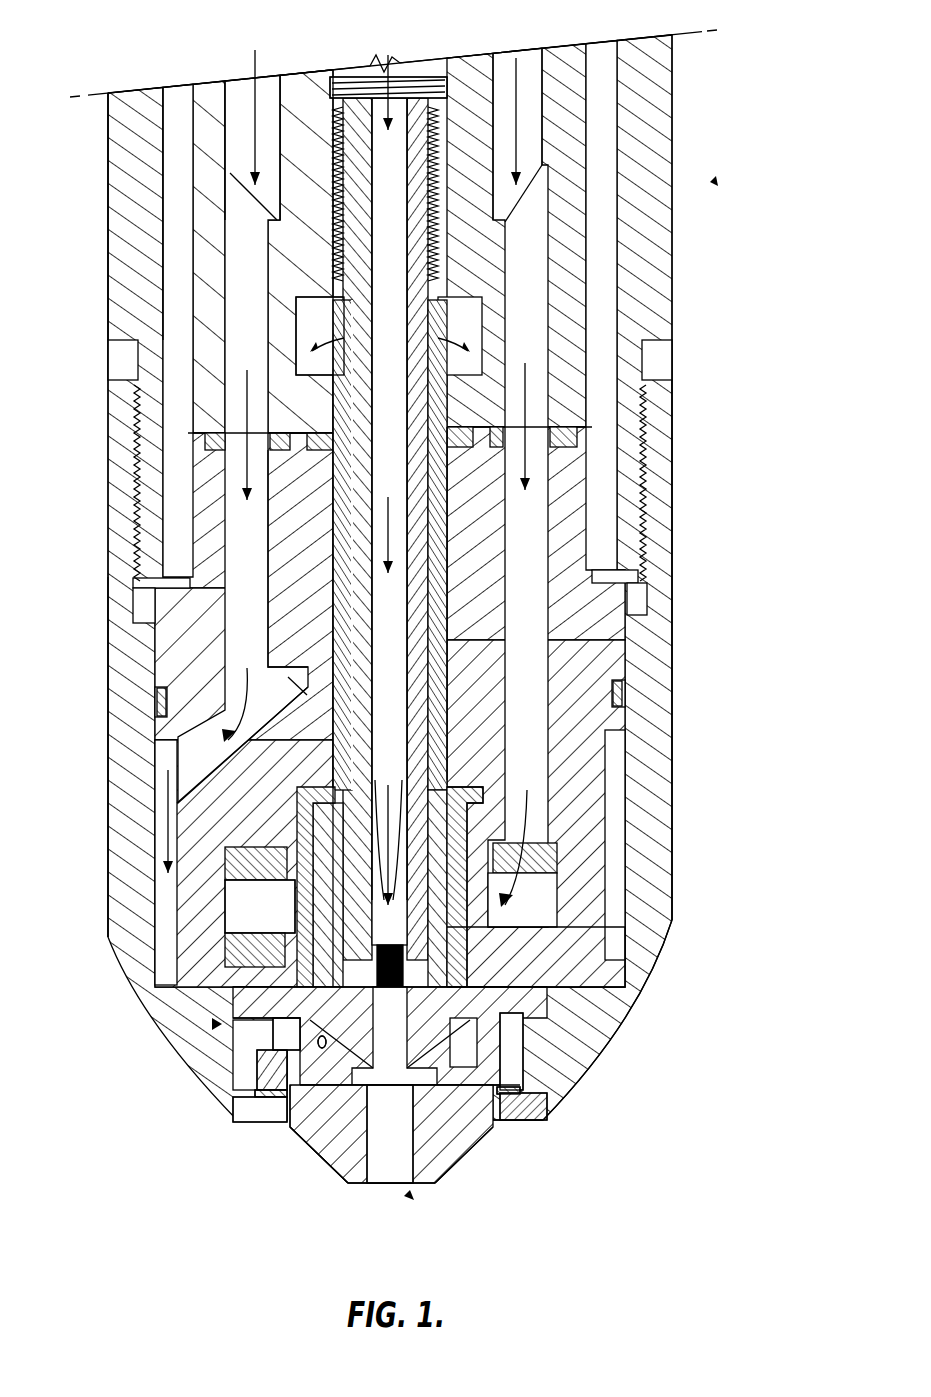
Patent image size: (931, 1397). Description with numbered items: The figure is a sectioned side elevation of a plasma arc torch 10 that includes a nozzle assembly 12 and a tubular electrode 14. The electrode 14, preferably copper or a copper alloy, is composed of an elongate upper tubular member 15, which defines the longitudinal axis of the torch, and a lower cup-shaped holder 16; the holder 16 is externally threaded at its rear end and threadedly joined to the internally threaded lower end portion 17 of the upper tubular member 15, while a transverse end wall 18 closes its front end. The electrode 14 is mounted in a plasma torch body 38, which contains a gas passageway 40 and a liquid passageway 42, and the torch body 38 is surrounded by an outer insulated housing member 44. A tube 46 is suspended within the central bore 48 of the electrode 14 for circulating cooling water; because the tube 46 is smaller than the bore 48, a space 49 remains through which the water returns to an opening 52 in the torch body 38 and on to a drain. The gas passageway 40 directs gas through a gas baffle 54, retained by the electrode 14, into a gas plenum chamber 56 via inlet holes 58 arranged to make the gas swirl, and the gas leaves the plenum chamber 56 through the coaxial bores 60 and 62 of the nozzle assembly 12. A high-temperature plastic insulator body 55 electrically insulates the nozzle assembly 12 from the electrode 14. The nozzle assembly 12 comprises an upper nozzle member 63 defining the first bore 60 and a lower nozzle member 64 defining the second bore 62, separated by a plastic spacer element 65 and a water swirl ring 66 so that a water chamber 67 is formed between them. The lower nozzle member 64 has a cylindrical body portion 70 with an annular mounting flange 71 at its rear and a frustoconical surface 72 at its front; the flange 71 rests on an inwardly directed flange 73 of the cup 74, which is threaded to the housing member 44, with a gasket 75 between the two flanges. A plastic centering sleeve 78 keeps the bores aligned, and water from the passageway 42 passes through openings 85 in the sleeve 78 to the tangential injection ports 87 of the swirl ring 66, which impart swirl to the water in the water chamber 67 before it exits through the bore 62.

The plasma arc torch 10 is at (710, 182).
The nozzle assembly 12 is at (410, 1190).
The tubular electrode 14 is at (333, 597).
The upper tubular member 15 is at (307, 633).
The holder 16 is at (333, 913).
The lower end portion 17 is at (495, 815).
The transverse end wall 18 is at (212, 1024).
The plasma torch body 38 is at (308, 95).
The gas passageway 40 is at (503, 60).
The liquid passageway 42 is at (250, 90).
The outer insulated housing member 44 is at (118, 132).
The tube 46 is at (413, 107).
The central bore 48 is at (427, 390).
The space 49 is at (425, 562).
The opening 52 is at (290, 338).
The gas baffle 54 is at (293, 793).
The insulator body 55 is at (177, 667).
The gas plenum chamber 56 is at (570, 997).
The inlet holes 58 is at (225, 998).
The first bore 60 is at (390, 1070).
The second bore 62 is at (380, 1173).
The upper nozzle member 63 is at (460, 977).
The lower nozzle member 64 is at (328, 1152).
The plastic spacer element 65 is at (550, 1060).
The water swirl ring 66 is at (277, 1072).
The water chamber 67 is at (293, 1143).
The cylindrical body portion 70 is at (277, 1127).
The annular mounting flange 71 is at (533, 1065).
The frustoconical surface 72 is at (453, 1157).
The inwardly directed flange 73 is at (517, 1115).
The cup 74 is at (673, 730).
The gasket 75 is at (270, 1093).
The centering sleeve 78 is at (257, 1047).
The openings 85 is at (593, 1048).
The injection ports 87 is at (335, 1045).